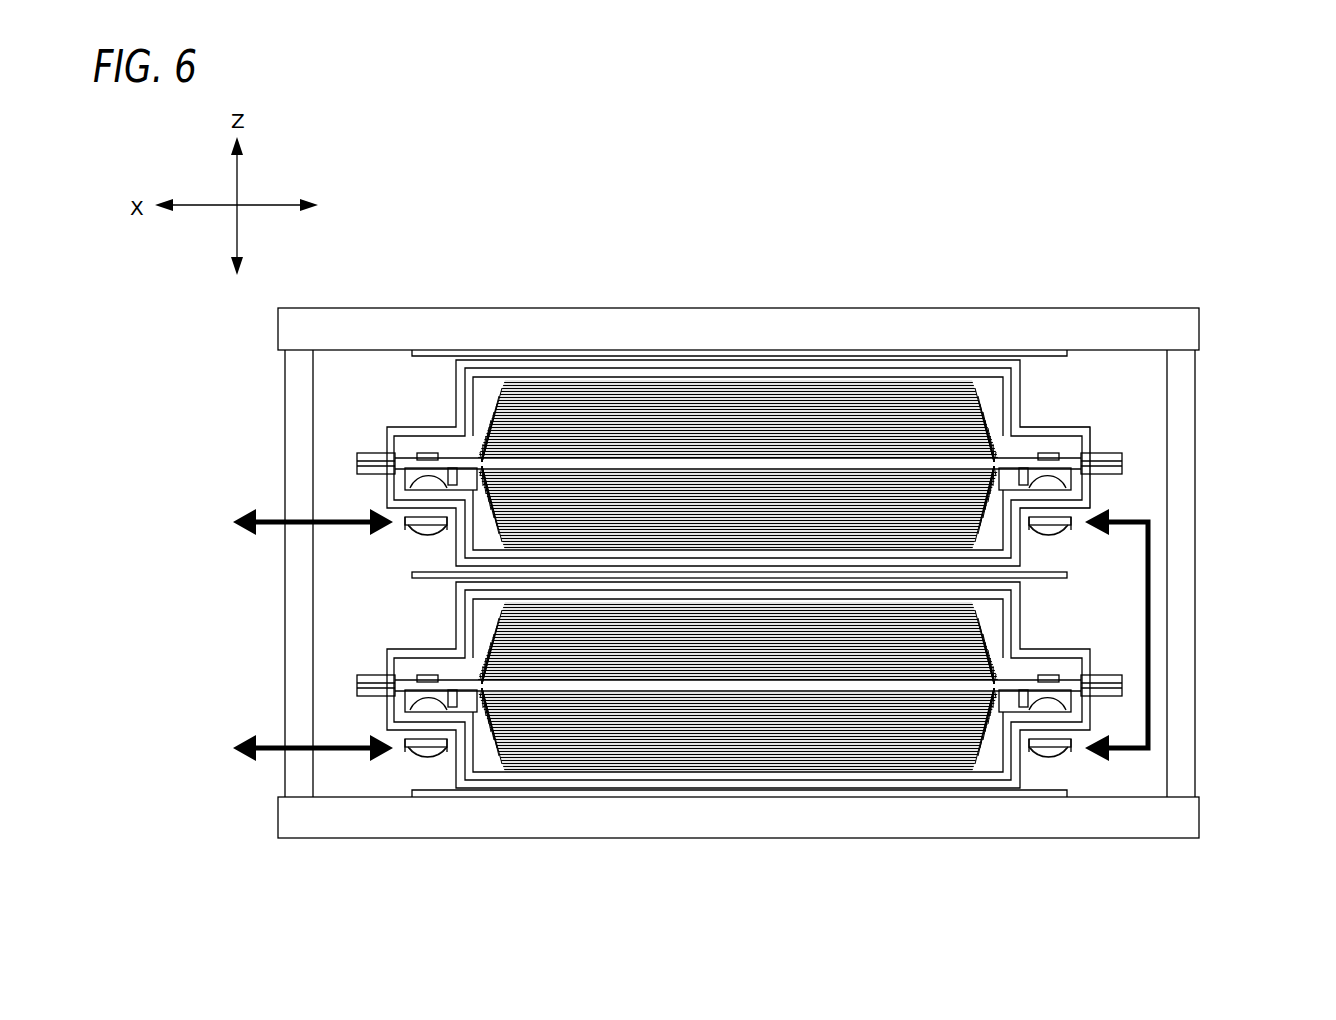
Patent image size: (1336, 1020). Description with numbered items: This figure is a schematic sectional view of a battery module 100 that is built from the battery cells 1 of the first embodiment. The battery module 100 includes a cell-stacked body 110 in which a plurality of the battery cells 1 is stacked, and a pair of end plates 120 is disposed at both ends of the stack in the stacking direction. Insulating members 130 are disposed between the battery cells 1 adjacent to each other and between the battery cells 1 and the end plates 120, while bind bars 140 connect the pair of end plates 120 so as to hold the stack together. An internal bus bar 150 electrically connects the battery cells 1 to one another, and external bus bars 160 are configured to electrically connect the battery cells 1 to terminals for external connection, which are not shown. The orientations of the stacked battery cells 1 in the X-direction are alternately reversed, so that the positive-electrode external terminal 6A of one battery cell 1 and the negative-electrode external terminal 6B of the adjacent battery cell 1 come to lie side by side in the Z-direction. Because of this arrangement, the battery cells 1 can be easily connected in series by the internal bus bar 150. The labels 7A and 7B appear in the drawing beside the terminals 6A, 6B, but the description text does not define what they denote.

The battery cell 1 is at (1029, 393).
The positive-electrode external terminal 6A is at (406, 531).
The negative-electrode external terminal 6B is at (1063, 538).
The first bearing holder 7A is at (407, 525).
The second bearing holder 7B is at (1073, 529).
The battery module 100 is at (1041, 260).
The cell-stacked body 110 is at (1108, 424).
The end plate 120 is at (694, 306).
The insulating member 130 is at (437, 362).
The bind bar 140 is at (283, 412).
The internal bus bar 150 is at (1153, 678).
The external bus bar 160 is at (274, 517).